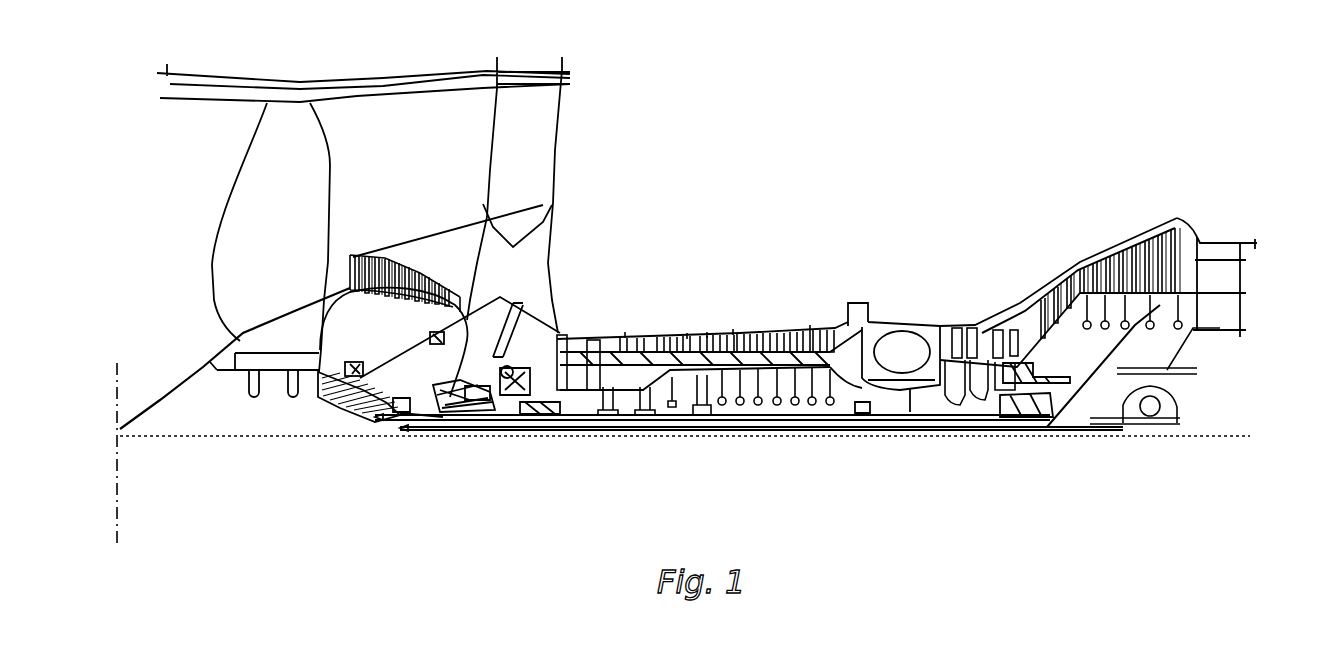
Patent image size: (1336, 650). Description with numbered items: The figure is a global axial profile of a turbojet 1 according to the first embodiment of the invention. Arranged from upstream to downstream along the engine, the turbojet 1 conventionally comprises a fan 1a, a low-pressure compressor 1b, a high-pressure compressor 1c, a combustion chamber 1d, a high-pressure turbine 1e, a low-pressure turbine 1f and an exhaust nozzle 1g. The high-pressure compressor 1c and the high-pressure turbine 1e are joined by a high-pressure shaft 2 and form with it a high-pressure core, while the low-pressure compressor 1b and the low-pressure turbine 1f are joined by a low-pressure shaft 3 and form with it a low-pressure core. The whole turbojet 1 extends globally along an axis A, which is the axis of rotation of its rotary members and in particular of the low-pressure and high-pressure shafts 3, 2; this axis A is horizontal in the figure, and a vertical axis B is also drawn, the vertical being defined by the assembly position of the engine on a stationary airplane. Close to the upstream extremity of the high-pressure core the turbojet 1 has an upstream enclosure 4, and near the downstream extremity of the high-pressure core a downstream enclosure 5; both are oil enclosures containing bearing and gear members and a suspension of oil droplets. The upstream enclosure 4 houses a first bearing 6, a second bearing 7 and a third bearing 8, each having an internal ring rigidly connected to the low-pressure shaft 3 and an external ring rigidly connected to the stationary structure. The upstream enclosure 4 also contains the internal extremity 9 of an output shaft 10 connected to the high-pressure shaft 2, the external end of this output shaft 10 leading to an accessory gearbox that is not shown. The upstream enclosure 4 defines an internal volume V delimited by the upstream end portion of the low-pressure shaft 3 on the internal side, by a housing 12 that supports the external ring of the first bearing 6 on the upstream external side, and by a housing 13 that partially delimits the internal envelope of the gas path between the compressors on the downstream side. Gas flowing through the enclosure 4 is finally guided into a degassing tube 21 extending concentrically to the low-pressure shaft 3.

The turbojet 1 is at (872, 147).
The fan 1a is at (195, 238).
The low-pressure compressor 1b is at (395, 248).
The high-pressure compressor 1c is at (750, 343).
The combustion chamber 1d is at (905, 353).
The high-pressure turbine 1e is at (990, 315).
The low-pressure turbine 1f is at (1145, 218).
The exhaust nozzle 1g is at (1248, 278).
The high-pressure shaft 2 is at (870, 403).
The low-pressure shaft 3 is at (933, 427).
The upstream enclosure 4 is at (430, 398).
The downstream enclosure 5 is at (1050, 397).
The first bearing 6 is at (353, 410).
The second bearing 7 is at (400, 398).
The third bearing 8 is at (533, 408).
The internal extremity of output shaft 9 is at (475, 397).
The output shaft 10 is at (513, 337).
The housing 12 is at (362, 377).
The housing 13 is at (510, 366).
The degassing tube 21 is at (620, 430).
The axis A is at (1195, 443).
The vertical axis B is at (117, 488).
The internal volume V is at (437, 378).